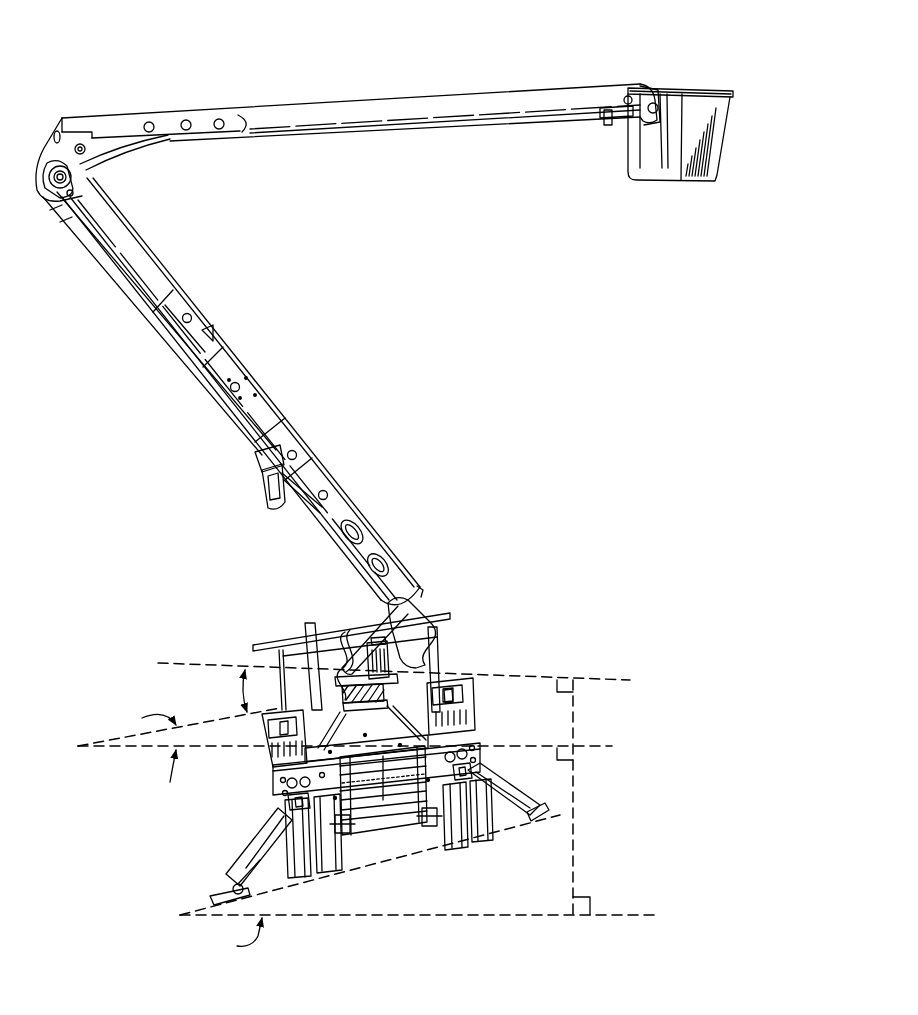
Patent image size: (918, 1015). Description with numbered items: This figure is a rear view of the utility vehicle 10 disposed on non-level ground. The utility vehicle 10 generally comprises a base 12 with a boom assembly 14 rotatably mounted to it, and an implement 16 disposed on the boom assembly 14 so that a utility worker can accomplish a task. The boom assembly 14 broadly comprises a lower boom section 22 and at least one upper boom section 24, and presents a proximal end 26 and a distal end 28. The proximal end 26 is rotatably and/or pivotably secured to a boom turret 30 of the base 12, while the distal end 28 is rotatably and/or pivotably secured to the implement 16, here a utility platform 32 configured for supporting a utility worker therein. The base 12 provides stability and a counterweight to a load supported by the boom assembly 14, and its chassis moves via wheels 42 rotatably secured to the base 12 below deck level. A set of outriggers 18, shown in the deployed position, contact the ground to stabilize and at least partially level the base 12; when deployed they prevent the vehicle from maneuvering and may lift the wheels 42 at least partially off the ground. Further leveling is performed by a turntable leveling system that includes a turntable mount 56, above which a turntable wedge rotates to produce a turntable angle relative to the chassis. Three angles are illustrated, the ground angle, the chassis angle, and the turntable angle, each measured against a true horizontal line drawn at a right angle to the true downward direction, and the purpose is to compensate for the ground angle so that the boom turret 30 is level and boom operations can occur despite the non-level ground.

The utility vehicle 10 is at (95, 27).
The base 12 is at (146, 870).
The boom assembly 14 is at (369, 269).
The implement 16 is at (702, 72).
The outriggers 18 is at (511, 773).
The lower boom section 22 is at (210, 327).
The upper boom section 24 is at (242, 135).
The proximal end 26 is at (432, 582).
The distal end 28 is at (607, 143).
The boom turret 30 is at (412, 652).
The utility platform 32 is at (723, 128).
The wheels 42 is at (300, 878).
The turntable mount 56 is at (397, 720).